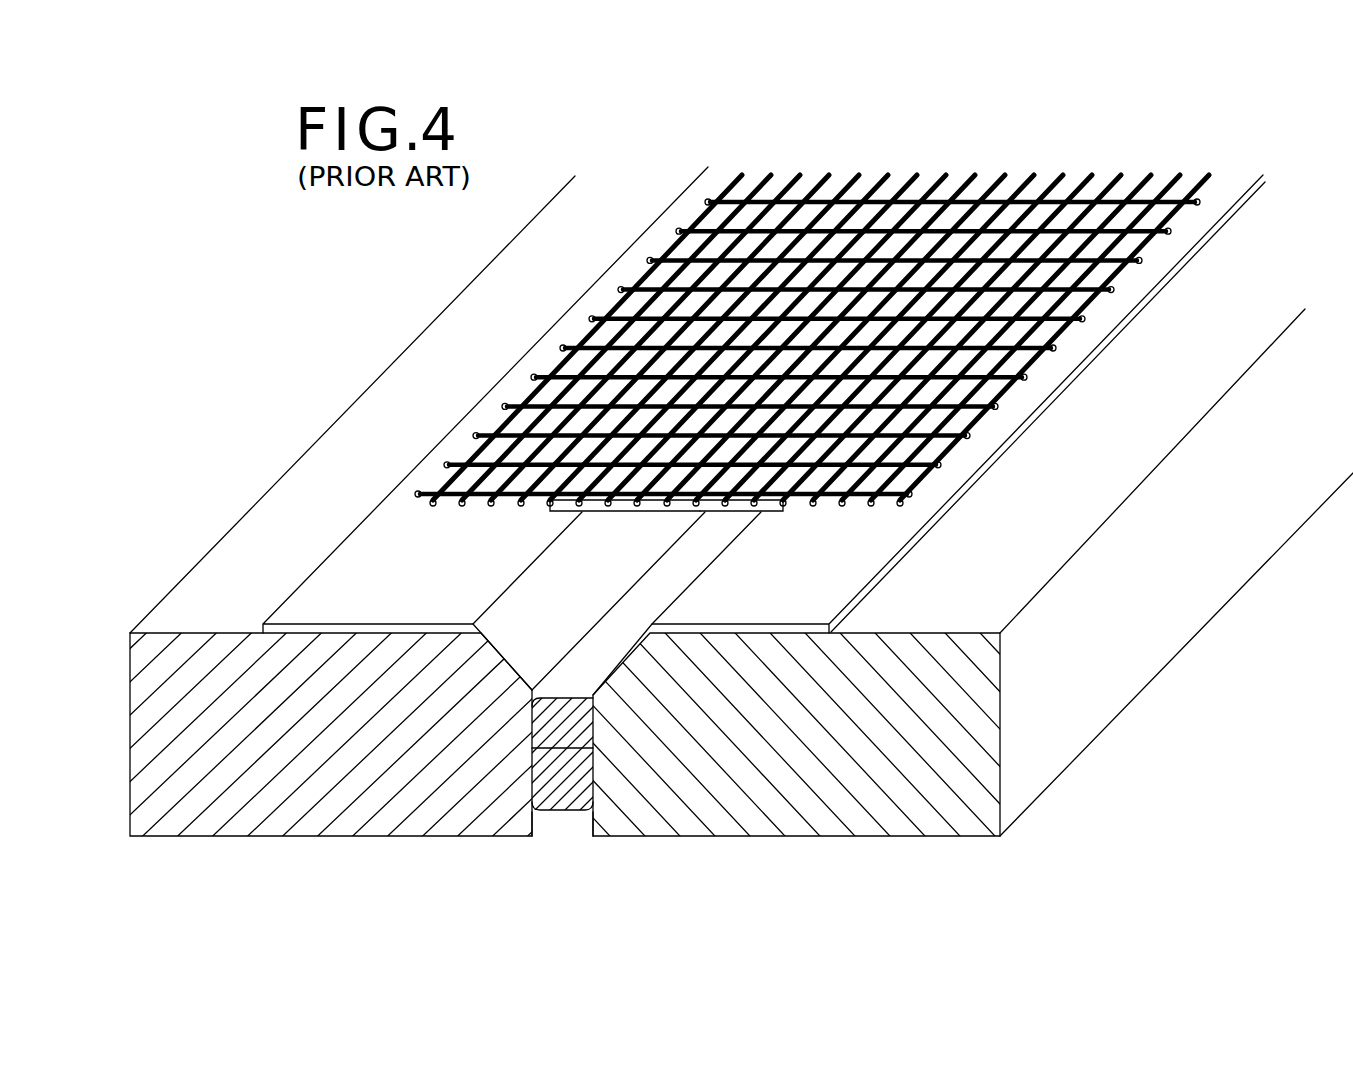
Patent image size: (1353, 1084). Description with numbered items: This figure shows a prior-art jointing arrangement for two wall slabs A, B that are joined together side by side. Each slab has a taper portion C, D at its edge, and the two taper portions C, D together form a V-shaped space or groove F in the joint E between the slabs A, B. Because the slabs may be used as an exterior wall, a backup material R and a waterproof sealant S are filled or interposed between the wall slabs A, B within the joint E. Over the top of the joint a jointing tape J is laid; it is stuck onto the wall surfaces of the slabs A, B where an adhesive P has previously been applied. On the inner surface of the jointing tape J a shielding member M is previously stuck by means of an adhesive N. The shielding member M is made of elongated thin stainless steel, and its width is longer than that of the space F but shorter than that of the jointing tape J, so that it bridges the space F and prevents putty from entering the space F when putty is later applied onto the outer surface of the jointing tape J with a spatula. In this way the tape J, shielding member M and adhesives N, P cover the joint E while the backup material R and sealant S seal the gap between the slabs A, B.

The wall slab A is at (231, 805).
The wall slab B is at (913, 795).
The adhesive P is at (357, 571).
The taper portion C is at (498, 631).
The taper portion D is at (633, 652).
The waterproof sealant S is at (557, 723).
The backup material R is at (578, 797).
The joint E is at (560, 832).
The V-shaped space F is at (648, 602).
The jointing tape J is at (1040, 365).
The adhesive N is at (622, 510).
The shielding member M is at (779, 513).